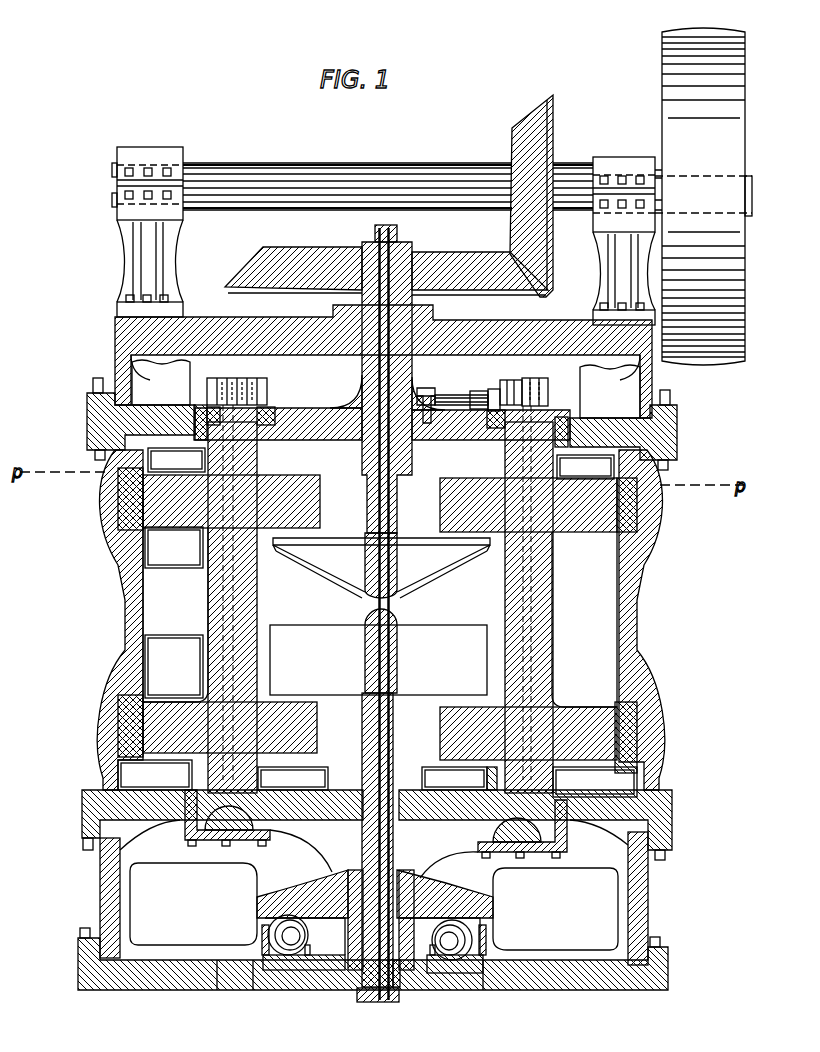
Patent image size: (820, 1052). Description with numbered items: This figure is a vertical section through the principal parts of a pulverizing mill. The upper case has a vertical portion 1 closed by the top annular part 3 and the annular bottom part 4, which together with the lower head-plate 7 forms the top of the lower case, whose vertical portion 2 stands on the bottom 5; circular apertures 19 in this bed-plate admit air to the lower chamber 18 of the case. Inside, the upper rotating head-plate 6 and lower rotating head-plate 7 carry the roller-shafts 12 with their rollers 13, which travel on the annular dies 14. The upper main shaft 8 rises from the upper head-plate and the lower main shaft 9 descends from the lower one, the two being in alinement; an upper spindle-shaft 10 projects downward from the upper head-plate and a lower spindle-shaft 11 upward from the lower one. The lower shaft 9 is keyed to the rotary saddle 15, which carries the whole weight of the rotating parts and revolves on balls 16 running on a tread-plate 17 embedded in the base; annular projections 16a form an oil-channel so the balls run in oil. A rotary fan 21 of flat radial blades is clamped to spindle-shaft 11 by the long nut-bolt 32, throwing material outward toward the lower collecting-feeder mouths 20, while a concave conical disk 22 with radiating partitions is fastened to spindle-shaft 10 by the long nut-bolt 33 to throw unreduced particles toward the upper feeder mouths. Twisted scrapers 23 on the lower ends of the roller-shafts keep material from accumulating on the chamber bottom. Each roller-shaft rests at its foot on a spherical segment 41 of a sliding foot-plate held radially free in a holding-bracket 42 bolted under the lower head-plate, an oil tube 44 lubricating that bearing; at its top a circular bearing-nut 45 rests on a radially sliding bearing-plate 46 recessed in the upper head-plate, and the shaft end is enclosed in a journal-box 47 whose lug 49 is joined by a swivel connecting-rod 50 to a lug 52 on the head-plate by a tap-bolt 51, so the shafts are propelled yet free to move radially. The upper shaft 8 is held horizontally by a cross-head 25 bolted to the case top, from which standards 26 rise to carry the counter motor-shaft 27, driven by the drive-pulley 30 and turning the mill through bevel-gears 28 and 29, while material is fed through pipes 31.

The vertical portion of the upper case 1 is at (105, 505).
The vertical portion of the lower case 2 is at (100, 887).
The top annular part of the upper case 3 is at (87, 421).
The annular part of the bottom of the upper case 4 is at (82, 803).
The bottom of the lower case 5 is at (78, 970).
The upper rotating head-plate 6 is at (318, 441).
The lower rotating head-plate 7 is at (374, 853).
The upper end of the main shaft 8 is at (412, 250).
The lower end of the main shaft 9 is at (393, 985).
The upper spindle-shaft 10 is at (394, 509).
The lower spindle-shaft 11 is at (393, 740).
The roller-shaft 12 is at (207, 600).
The roller 13 is at (318, 513).
The annular die 14 is at (127, 520).
The rotary saddle 15 is at (288, 897).
The ball 16 is at (308, 938).
The annular projection 16a is at (262, 937).
The tread-plate 17 is at (280, 970).
The base chamber 18 is at (374, 906).
The circular aperture 19 is at (368, 986).
The mouth end of collecting-feeder 20 is at (174, 612).
The rotary fan 21 is at (378, 660).
The rotary conical disk 22 is at (330, 541).
The twisted scraper 23 is at (377, 778).
The cross-head 25 is at (117, 340).
The standard 26 is at (120, 266).
The counter motor-shaft 27 is at (422, 177).
The bevel-gear 28 is at (386, 262).
The bevel-gear 29 is at (528, 126).
The drive-pulley 30 is at (690, 196).
The feed pipe 31 is at (386, 389).
The long nut-bolt 32 is at (372, 1003).
The long nut-bolt 33 is at (375, 232).
The spherical segment 41 is at (205, 823).
The holding-bracket 42 is at (185, 843).
The oil tube 44 is at (548, 392).
The circular bearing-nut 45 is at (268, 410).
The sliding bearing-plate 46 is at (262, 441).
The journal-box 47 is at (268, 374).
The lug 49 is at (515, 386).
The swivel connecting-rod 50 is at (490, 391).
The tap-bolt 51 is at (428, 389).
The lug 52 is at (448, 395).